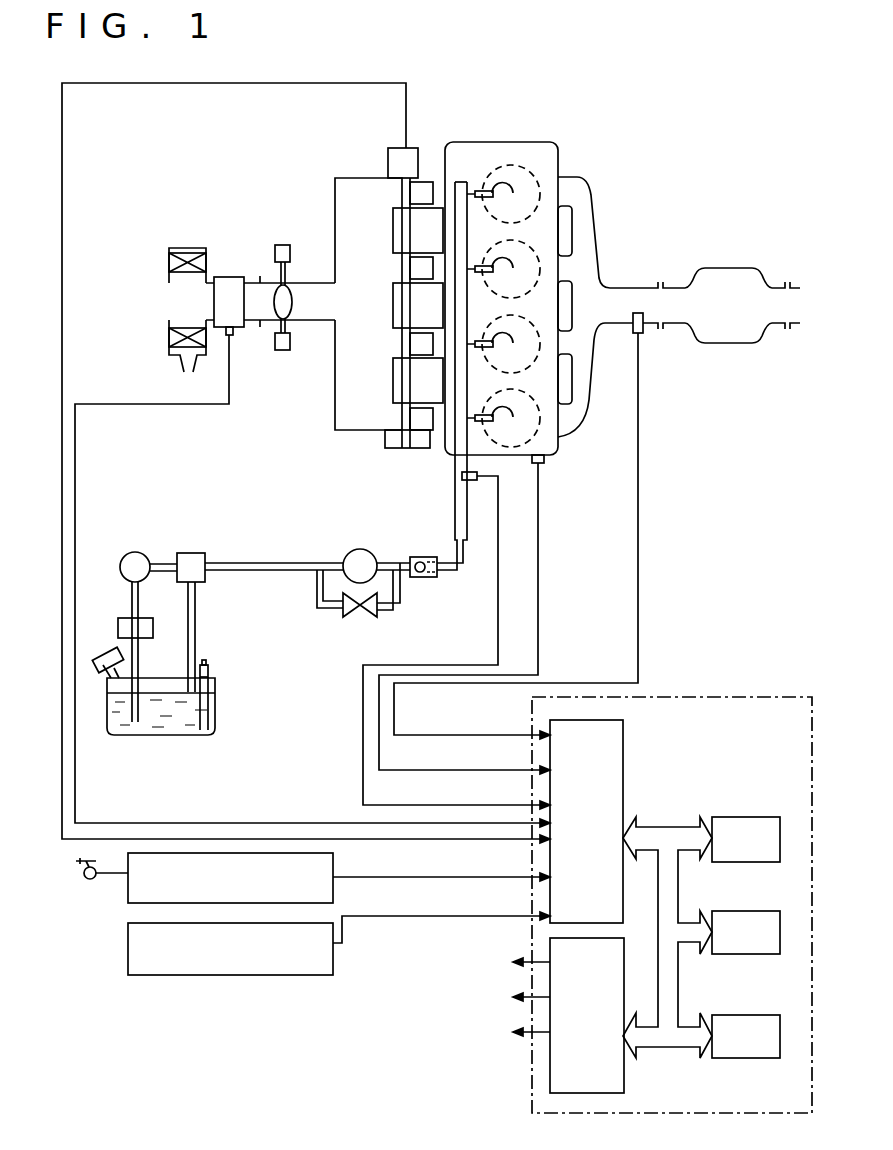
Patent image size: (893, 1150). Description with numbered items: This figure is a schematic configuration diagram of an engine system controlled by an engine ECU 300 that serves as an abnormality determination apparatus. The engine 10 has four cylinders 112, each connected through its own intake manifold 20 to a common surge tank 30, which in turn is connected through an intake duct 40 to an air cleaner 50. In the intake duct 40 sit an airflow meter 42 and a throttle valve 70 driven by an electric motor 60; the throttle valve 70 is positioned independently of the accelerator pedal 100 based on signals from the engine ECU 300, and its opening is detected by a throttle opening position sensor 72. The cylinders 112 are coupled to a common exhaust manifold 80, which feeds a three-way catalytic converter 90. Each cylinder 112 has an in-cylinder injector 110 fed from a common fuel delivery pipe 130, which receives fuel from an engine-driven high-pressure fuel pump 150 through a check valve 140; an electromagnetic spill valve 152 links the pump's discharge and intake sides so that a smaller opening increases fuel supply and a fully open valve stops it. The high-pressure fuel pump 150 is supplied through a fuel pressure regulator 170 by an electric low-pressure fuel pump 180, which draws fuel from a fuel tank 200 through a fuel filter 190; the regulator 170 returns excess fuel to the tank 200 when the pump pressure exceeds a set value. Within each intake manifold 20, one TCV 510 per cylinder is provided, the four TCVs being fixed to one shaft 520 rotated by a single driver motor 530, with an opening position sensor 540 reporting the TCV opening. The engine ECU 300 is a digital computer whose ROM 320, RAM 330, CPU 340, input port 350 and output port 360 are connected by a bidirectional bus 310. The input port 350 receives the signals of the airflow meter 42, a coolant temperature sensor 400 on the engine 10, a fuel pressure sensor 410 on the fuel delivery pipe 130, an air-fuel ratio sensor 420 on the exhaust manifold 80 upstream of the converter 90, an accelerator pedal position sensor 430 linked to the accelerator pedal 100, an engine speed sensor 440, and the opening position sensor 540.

The engine 10 is at (560, 140).
The intake manifold 20 is at (441, 452).
The surge tank 30 is at (353, 178).
The intake duct 40 is at (310, 283).
The airflow meter 42 is at (228, 277).
The air cleaner 50 is at (169, 300).
The electric motor 60 is at (280, 245).
The throttle valve 70 is at (288, 307).
The throttle opening position sensor 72 is at (283, 352).
The exhaust manifold 80 is at (598, 217).
The three-way catalytic converter 90 is at (725, 268).
The accelerator pedal 100 is at (83, 877).
The in-cylinder injector 110 is at (511, 306).
The cylinder 112 is at (598, 152).
The fuel delivery pipe 130 is at (462, 182).
The check valve 140 is at (425, 578).
The high-pressure fuel pump 150 is at (343, 555).
The electromagnetic spill valve 152 is at (362, 622).
The fuel pressure regulator 170 is at (190, 553).
The low-pressure fuel pump 180 is at (137, 552).
The fuel filter 190 is at (120, 620).
The fuel tank 200 is at (160, 735).
The engine ECU 300 is at (735, 690).
The bidirectional bus 310 is at (665, 827).
The ROM 320 is at (735, 817).
The RAM 330 is at (735, 911).
The CPU 340 is at (735, 1015).
The input port 350 is at (625, 742).
The output port 360 is at (625, 1082).
The coolant temperature sensor 400 is at (542, 464).
The fuel pressure sensor 410 is at (478, 478).
The air-fuel ratio sensor 420 is at (645, 335).
The accelerator pedal position sensor 430 is at (128, 895).
The engine speed sensor 440 is at (128, 957).
The TCV 510 is at (383, 290).
The shaft 520 is at (392, 442).
The driver motor 530 is at (395, 450).
The opening position sensor 540 is at (395, 148).